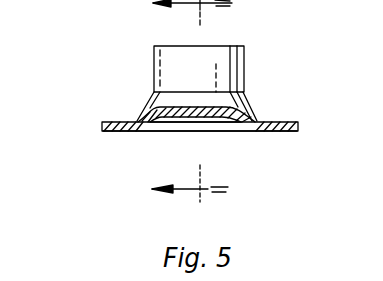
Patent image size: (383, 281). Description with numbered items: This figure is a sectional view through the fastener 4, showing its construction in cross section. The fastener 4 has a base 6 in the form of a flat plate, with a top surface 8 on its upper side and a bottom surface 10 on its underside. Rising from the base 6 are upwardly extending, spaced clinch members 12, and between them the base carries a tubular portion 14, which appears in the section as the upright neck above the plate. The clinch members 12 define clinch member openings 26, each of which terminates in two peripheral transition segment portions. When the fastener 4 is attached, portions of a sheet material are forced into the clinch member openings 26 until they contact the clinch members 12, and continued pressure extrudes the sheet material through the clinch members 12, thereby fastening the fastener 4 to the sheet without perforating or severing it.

The fastener 4 is at (147, 65).
The base 6 is at (78, 119).
The top surface 8 is at (122, 119).
The bottom surface 10 is at (115, 133).
The clinch members 12 is at (200, 108).
The tubular portion 14 is at (245, 65).
The clinch member openings 26 is at (208, 122).